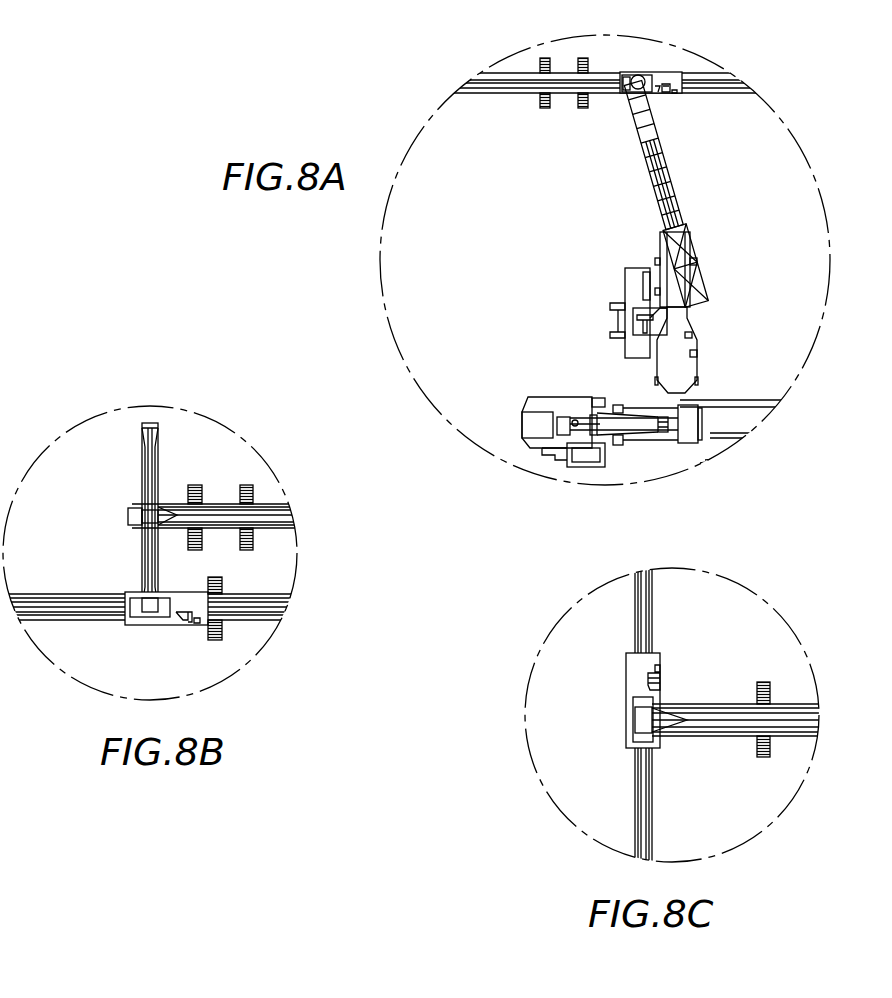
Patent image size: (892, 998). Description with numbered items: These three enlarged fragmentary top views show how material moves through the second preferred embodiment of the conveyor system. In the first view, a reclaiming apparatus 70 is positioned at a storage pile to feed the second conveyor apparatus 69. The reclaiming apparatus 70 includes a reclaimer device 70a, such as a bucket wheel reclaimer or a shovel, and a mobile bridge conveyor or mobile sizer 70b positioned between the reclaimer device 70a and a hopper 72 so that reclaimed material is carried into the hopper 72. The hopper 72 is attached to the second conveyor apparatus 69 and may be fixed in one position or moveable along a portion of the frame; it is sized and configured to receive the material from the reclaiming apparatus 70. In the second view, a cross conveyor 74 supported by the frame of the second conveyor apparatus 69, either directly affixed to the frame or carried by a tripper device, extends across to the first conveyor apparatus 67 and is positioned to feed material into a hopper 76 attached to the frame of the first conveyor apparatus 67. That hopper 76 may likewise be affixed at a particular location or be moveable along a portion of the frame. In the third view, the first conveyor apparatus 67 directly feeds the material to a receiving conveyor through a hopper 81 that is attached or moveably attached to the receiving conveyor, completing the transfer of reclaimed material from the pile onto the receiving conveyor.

In FIG. 8B, the first conveyor apparatus 67 is at (273, 593).
In FIG. 8A, the second conveyor apparatus 69 is at (708, 73).
In FIG. 8B, the second conveyor apparatus 69 is at (275, 503).
In FIG. 8A, the reclaiming apparatus 70 is at (615, 273).
In FIG. 8A, the reclaimer device 70a is at (511, 411).
In FIG. 8A, the mobile sizer 70b is at (722, 330).
In FIG. 8A, the hopper 72 is at (668, 78).
In FIG. 8B, the cross conveyor 74 is at (145, 450).
In FIG. 8B, the hopper 76 is at (183, 622).
In FIG. 8C, the hopper 81 is at (626, 675).